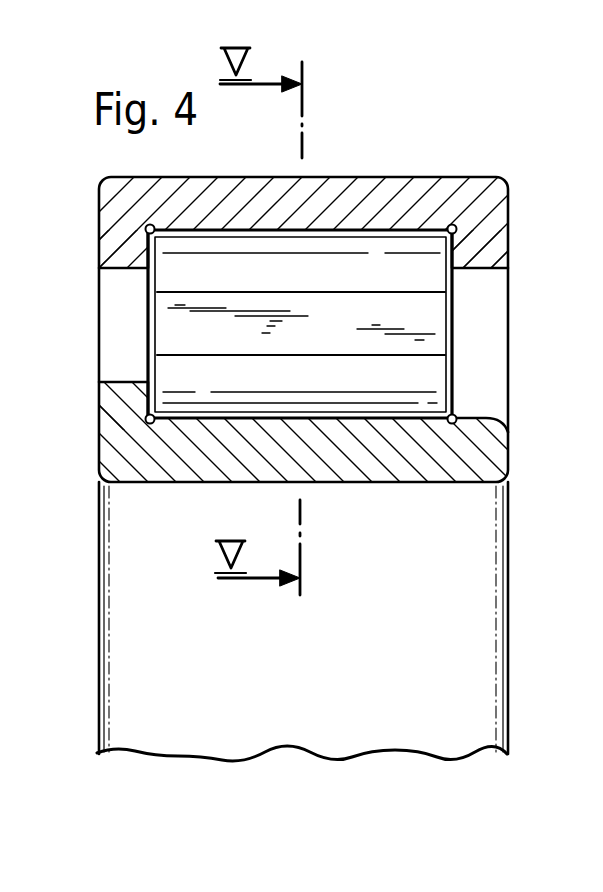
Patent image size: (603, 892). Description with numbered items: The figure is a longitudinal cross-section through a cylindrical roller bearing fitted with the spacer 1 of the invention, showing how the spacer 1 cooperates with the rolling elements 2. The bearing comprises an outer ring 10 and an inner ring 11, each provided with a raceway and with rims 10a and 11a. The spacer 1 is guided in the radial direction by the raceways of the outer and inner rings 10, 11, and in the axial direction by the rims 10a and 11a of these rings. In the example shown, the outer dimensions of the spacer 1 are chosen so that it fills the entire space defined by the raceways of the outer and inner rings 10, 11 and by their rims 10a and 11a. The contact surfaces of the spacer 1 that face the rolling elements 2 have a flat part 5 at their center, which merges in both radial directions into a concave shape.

The spacer 1 is at (418, 323).
The rolling elements 2 is at (453, 367).
The flat part of the contact surface 5 is at (191, 322).
The outer ring 10 is at (393, 200).
The rim of the outer ring 10a is at (124, 249).
The inner ring 11 is at (364, 460).
The rim of the inner ring 11a is at (122, 403).